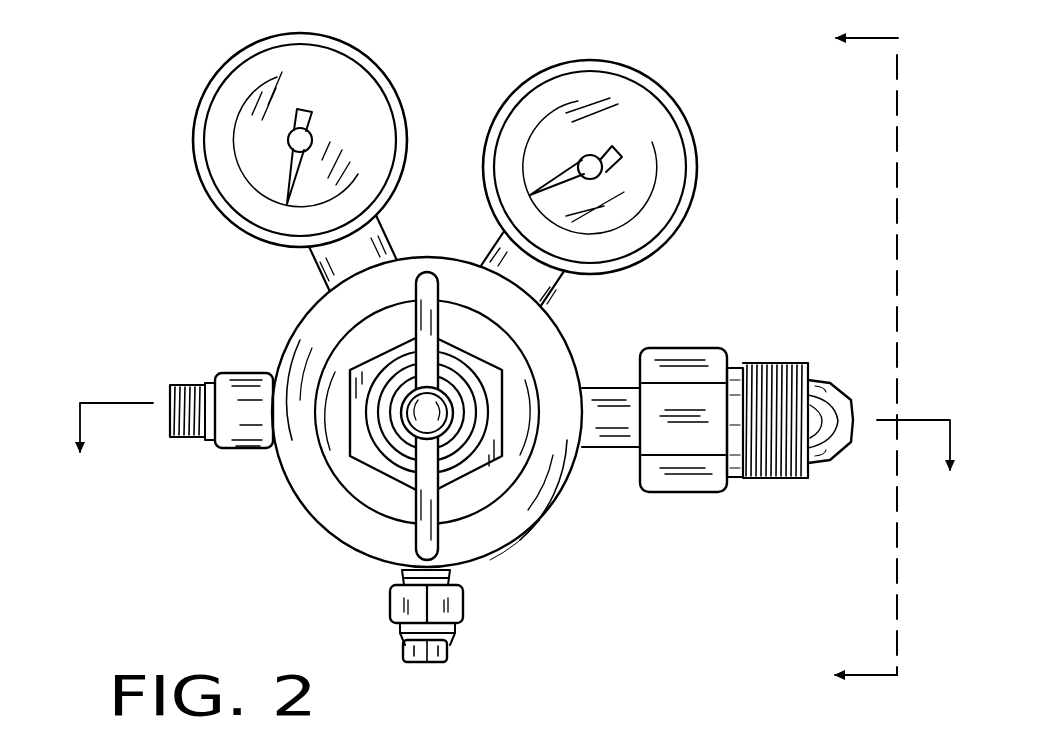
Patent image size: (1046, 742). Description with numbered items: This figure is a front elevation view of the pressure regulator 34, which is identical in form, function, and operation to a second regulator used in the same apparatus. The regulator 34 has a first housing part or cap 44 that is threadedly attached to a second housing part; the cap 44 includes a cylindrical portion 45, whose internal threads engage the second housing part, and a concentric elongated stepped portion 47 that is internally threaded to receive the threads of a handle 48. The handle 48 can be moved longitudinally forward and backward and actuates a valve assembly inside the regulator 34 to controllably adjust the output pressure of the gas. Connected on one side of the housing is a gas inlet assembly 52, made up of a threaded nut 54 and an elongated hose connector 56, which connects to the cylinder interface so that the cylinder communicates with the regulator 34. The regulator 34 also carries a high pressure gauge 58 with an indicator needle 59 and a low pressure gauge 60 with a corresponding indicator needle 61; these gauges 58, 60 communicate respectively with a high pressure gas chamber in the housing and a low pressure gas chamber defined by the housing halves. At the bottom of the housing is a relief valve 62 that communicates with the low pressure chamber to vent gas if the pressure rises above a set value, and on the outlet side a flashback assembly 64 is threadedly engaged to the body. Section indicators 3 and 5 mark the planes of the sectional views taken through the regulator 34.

The pressure regulator 34 is at (140, 123).
The first housing part or cap 44 is at (258, 308).
The cylindrical portion 45 is at (563, 497).
The elongated stepped portion 47 is at (367, 457).
The handle 48 is at (430, 535).
The gas inlet assembly 52 is at (758, 310).
The threaded nut 54 is at (698, 478).
The elongated hose connector 56 is at (835, 443).
The high pressure gauge 58 is at (608, 78).
The indicator needle 59 is at (620, 152).
The low pressure gauge 60 is at (333, 62).
The indicator needle 61 is at (316, 112).
The relief valve 62 is at (453, 603).
The flashback assembly 64 is at (208, 384).
The section line 3- 3 is at (845, 355).
The section line 5- 5 is at (514, 455).